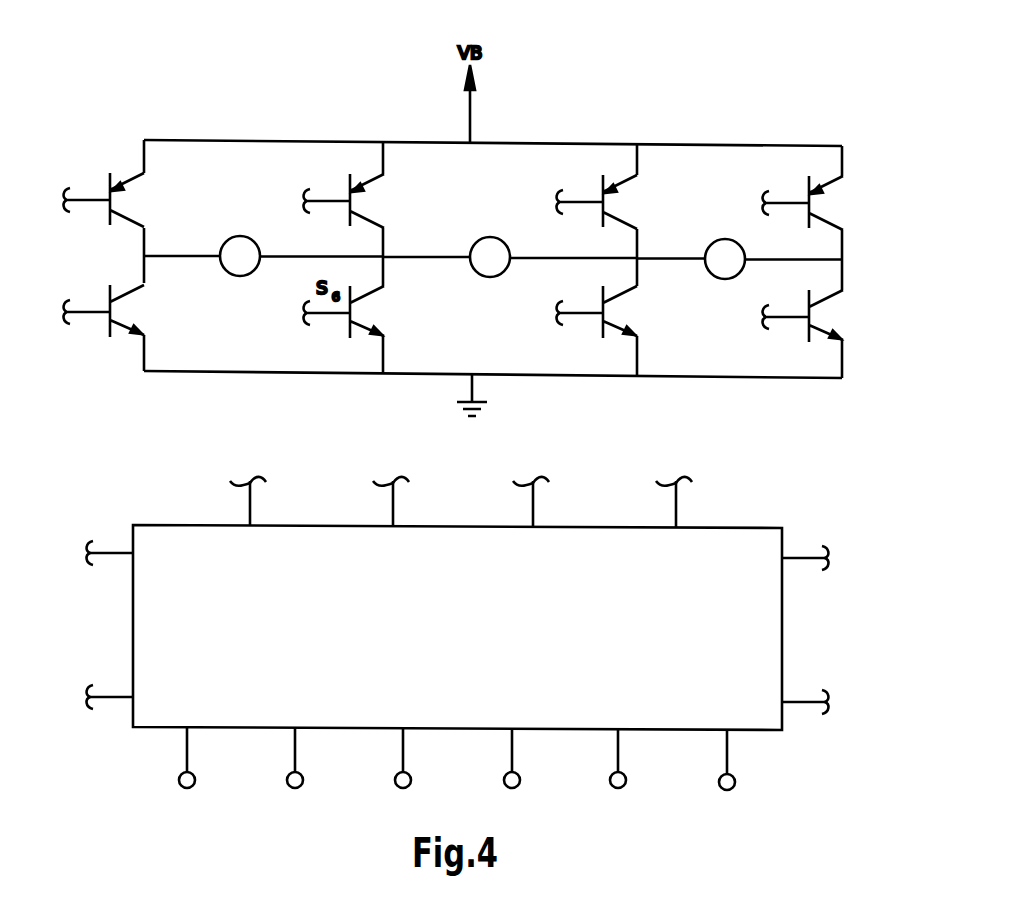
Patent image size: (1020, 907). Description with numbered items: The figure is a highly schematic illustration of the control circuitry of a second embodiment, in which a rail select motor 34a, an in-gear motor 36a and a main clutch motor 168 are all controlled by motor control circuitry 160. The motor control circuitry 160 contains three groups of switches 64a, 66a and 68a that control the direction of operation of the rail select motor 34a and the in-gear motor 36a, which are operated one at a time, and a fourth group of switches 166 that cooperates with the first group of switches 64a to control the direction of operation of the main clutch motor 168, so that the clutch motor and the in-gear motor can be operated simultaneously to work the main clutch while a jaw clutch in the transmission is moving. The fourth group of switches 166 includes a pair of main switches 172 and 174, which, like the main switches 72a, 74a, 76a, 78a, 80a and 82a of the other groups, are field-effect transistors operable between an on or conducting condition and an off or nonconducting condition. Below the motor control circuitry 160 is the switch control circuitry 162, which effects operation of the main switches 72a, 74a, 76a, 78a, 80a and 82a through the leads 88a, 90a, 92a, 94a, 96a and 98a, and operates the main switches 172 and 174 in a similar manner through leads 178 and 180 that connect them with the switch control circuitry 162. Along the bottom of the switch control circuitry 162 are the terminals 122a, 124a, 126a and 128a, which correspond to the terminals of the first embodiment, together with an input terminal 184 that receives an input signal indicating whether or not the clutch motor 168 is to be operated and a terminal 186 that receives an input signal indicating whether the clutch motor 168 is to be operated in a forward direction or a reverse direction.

The motor control circuitry 160 is at (862, 148).
The fourth group of switches 166 is at (838, 142).
The third group of switches 68a is at (152, 138).
The second group of switches 66a is at (383, 138).
The first group of switches 64a is at (639, 140).
The main switch 80a is at (136, 183).
The main switch 82a is at (125, 312).
The main switch 76a is at (375, 203).
The main switch 78a is at (373, 312).
The main switch 72a is at (623, 207).
The main switch 74a is at (622, 313).
The main switch 172 is at (830, 203).
The main switch 174 is at (832, 313).
The lead 96a is at (82, 201).
The lead 98a is at (82, 313).
The lead 92a is at (325, 202).
The lead 94a is at (325, 314).
The lead 88a is at (580, 203).
The lead 90a is at (580, 314).
The lead 178 is at (790, 204).
The lead 180 is at (790, 318).
The in-gear motor 36a is at (238, 279).
The rail select motor 34a is at (472, 277).
The main clutch motor 168 is at (713, 278).
The switch control circuitry 162 is at (793, 528).
The terminal 122a is at (186, 792).
The terminal 124a is at (298, 789).
The terminal 126a is at (407, 789).
The terminal 128a is at (516, 789).
The input terminal 184 is at (623, 790).
The terminal 186 is at (730, 792).